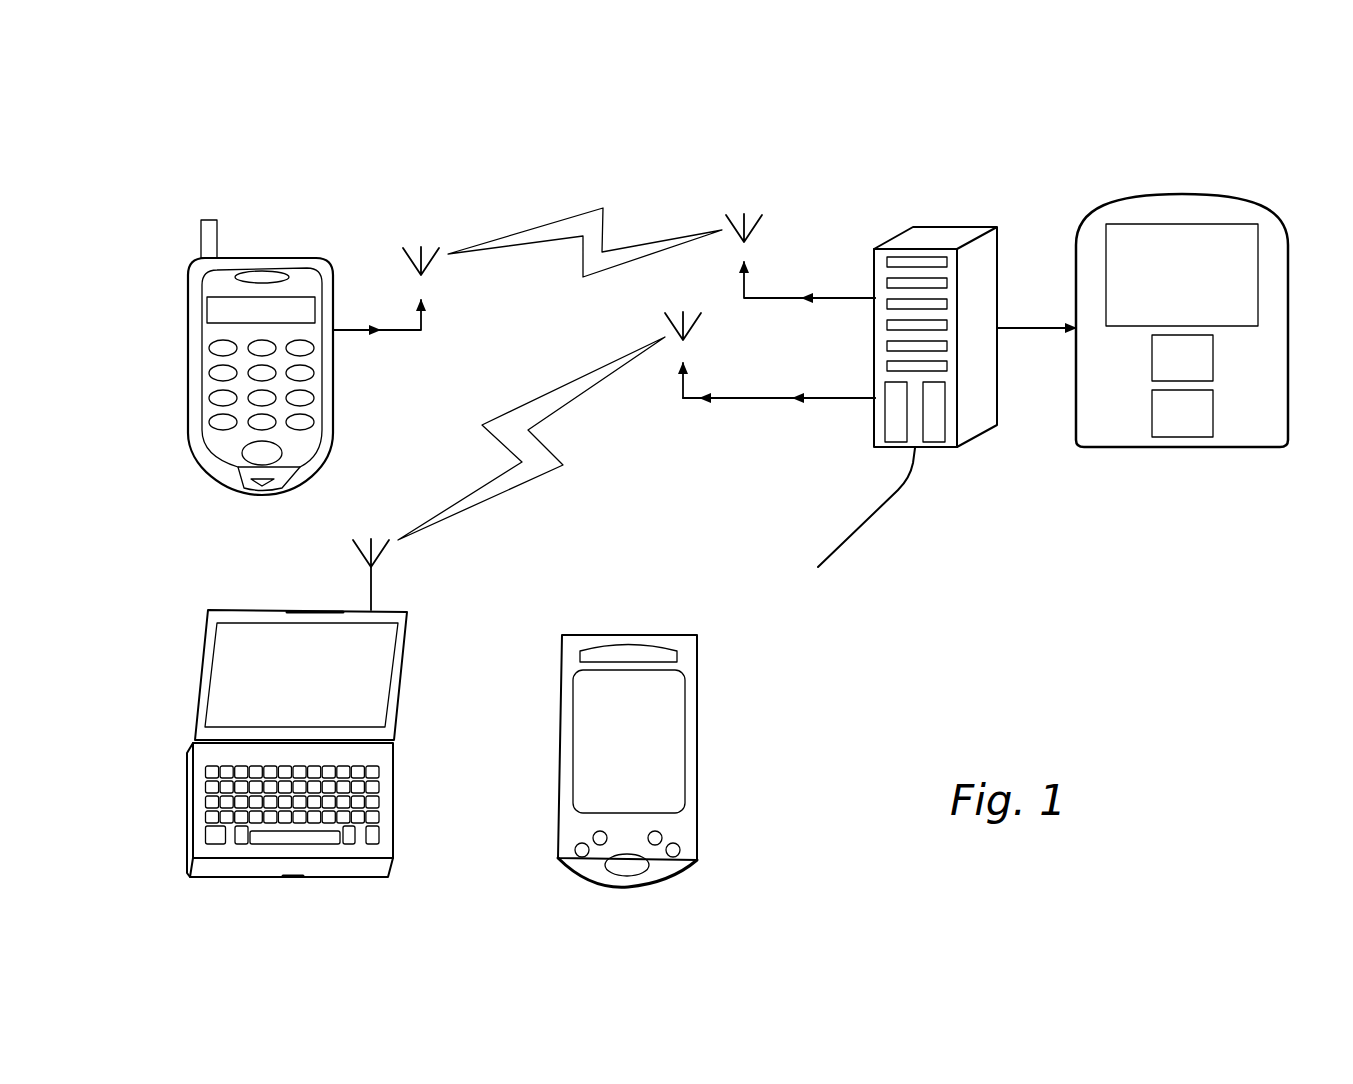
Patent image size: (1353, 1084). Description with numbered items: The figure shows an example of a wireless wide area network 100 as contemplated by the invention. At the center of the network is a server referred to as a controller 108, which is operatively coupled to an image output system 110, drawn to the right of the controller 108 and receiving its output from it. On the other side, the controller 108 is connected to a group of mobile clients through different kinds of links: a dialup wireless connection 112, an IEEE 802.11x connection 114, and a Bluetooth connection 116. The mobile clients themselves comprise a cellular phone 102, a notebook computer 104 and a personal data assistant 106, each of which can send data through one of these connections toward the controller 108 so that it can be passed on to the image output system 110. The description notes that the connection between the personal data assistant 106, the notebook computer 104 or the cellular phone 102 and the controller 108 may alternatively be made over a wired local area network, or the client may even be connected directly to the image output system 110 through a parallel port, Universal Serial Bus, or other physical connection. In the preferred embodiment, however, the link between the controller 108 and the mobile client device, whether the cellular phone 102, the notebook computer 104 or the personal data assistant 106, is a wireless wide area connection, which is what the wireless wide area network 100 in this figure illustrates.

The wireless wide area network 100 is at (1251, 155).
The cellular phone 102 is at (188, 367).
The notebook computer 104 is at (190, 807).
The personal data assistant 106 is at (698, 743).
The controller 108 is at (947, 226).
The image output system 110 is at (1179, 450).
The dialup wireless connection 112 is at (528, 228).
The IEEE 802.11x connection 114 is at (587, 389).
The Bluetooth connection 116 is at (852, 532).